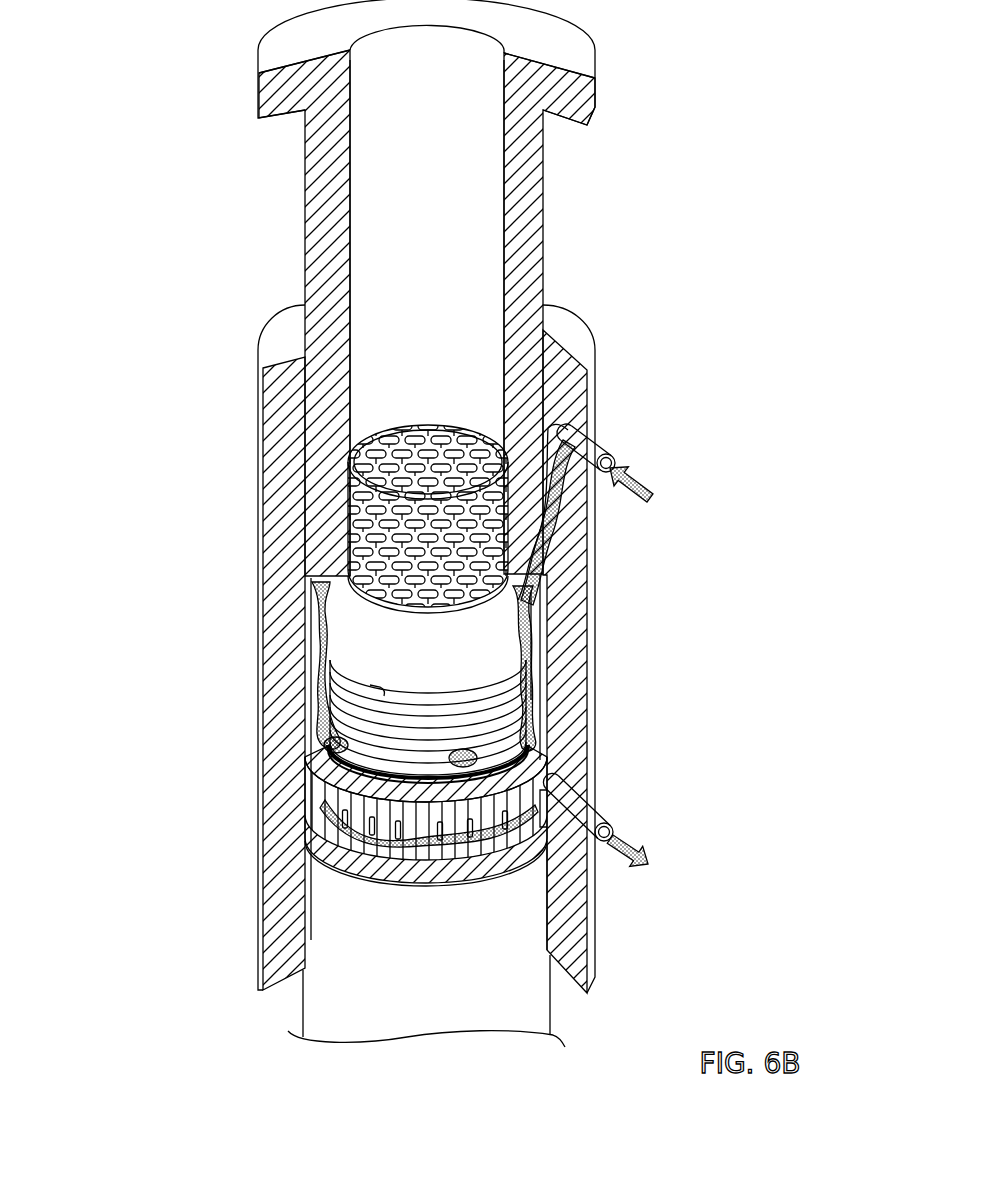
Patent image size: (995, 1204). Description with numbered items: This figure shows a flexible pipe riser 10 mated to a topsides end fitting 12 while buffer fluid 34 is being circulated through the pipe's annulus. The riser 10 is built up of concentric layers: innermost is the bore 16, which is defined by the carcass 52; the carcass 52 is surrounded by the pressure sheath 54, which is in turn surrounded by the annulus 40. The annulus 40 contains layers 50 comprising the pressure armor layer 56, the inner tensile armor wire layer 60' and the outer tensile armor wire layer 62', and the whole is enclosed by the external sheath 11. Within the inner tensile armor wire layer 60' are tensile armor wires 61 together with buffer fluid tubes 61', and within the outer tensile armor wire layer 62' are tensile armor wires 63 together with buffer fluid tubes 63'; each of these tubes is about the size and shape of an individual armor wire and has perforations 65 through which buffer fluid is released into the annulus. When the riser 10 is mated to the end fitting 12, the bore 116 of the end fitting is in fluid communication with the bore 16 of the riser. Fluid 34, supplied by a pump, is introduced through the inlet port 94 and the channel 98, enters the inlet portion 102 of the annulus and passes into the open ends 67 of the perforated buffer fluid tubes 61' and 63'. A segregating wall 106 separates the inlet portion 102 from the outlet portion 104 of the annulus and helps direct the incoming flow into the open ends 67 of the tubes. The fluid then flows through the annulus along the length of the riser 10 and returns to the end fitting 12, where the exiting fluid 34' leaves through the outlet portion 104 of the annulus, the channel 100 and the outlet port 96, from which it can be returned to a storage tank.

The flexible pipe riser 10 is at (172, 405).
The external sheath 11 is at (431, 1025).
The topsides end fitting 12 is at (212, 211).
The bore 16 is at (408, 447).
The buffer fluid 34 is at (450, 594).
The exiting buffer fluid 34' is at (485, 865).
The annulus 40 is at (462, 755).
The layers 50 is at (479, 755).
The carcass 52 is at (350, 512).
The pressure sheath 54 is at (520, 622).
The pressure armor layer 56 is at (540, 695).
The inner tensile armor wire layer 60' is at (385, 739).
The tensile armor wires 61 is at (380, 799).
The buffer fluid tubes 61' is at (378, 841).
The outer tensile armor wire layer 62' is at (597, 847).
The tensile armor wires 63 is at (481, 864).
The buffer fluid tubes 63' is at (399, 866).
The perforations 65 is at (345, 866).
The open ends 67 is at (407, 777).
The inlet port 94 is at (602, 447).
The outlet port 96 is at (595, 812).
The channel 98 is at (547, 427).
The channel 100 is at (540, 745).
The inlet portion 102 is at (312, 588).
The outlet portion 104 is at (540, 847).
The segregating wall 106 is at (540, 710).
The bore 116 is at (418, 226).